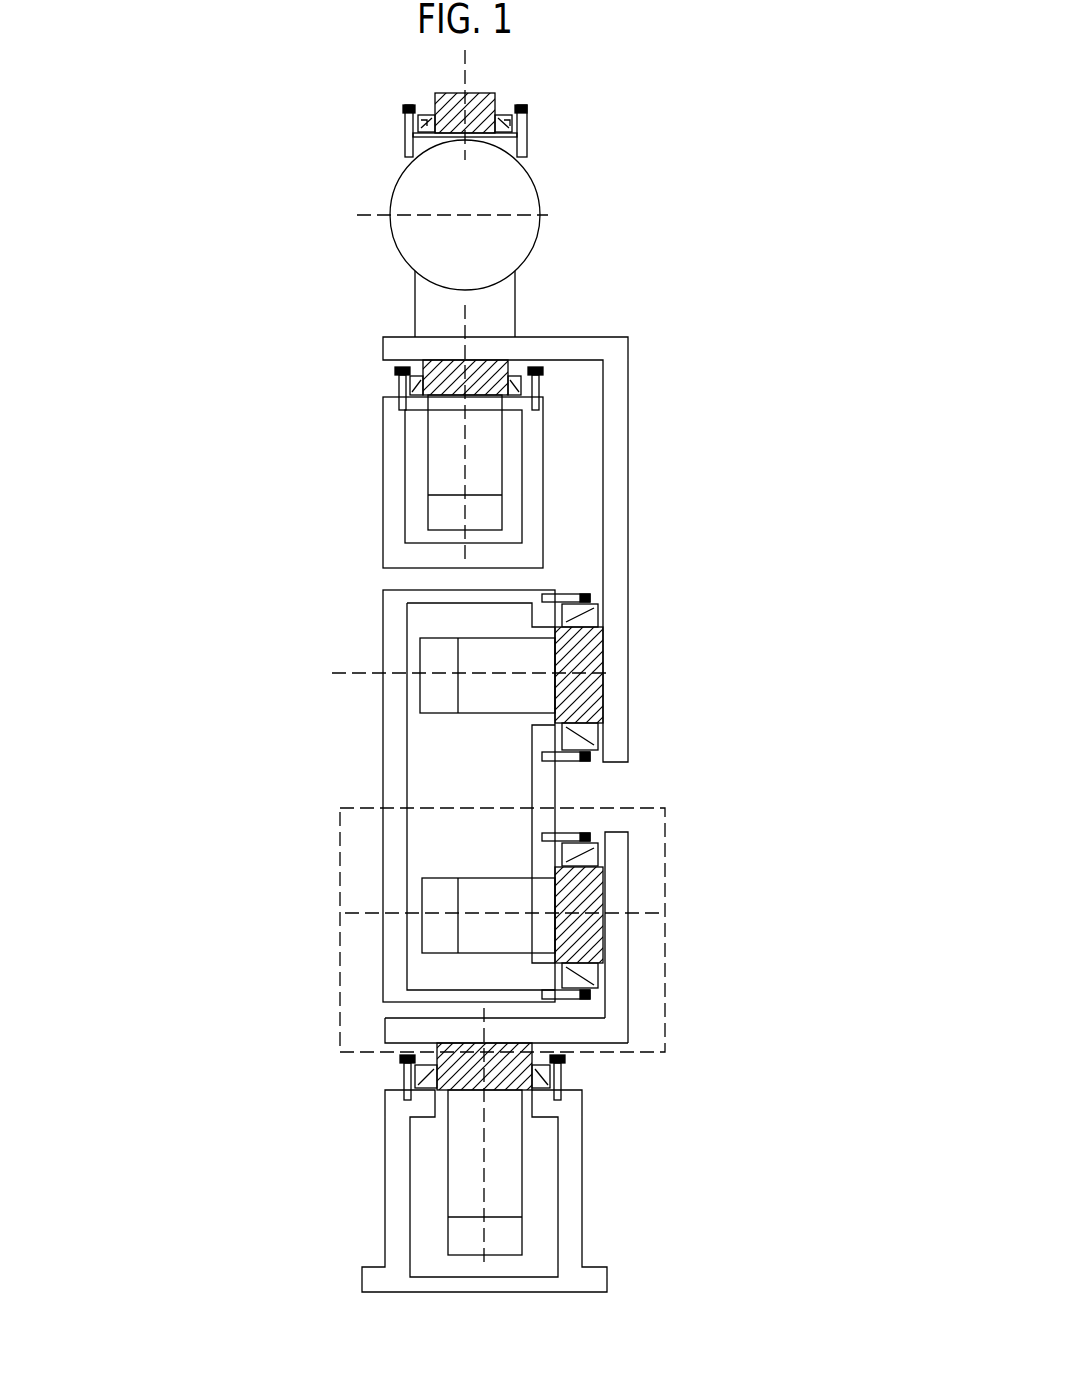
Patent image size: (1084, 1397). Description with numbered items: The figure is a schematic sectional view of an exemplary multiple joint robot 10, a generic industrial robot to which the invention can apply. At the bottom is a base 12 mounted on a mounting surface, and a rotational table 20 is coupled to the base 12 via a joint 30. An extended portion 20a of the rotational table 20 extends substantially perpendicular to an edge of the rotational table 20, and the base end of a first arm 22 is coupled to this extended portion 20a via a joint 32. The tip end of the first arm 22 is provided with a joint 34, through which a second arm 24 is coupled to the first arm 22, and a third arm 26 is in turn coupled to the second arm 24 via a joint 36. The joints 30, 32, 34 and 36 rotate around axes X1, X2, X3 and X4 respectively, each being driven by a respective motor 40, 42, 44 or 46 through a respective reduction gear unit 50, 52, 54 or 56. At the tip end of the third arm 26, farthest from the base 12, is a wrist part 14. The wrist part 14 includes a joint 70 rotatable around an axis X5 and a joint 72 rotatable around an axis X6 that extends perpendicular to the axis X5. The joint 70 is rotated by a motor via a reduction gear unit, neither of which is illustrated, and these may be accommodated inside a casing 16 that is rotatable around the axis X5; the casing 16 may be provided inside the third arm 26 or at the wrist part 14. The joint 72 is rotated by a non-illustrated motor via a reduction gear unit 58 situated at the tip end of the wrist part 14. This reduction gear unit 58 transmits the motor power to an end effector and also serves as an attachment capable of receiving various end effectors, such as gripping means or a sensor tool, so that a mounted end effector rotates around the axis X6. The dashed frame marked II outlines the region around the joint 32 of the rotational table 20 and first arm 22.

The multiple joint robot 10 is at (690, 388).
The base 12 is at (582, 1178).
The wrist part 14 is at (357, 168).
The casing 16 is at (540, 198).
The rotational table 20 is at (628, 1028).
The extended portion 20a is at (628, 953).
The first arm 22 is at (383, 662).
The second arm 24 is at (628, 455).
The third arm 26 is at (415, 290).
The joint 30 is at (370, 1063).
The joint 32 is at (642, 915).
The joint 34 is at (643, 683).
The joint 36 is at (380, 362).
The motor 40 is at (447, 1173).
The motor 42 is at (477, 878).
The motor 44 is at (480, 713).
The motor 46 is at (430, 458).
The reduction gear unit 50 is at (537, 1045).
The reduction gear unit 52 is at (592, 867).
The reduction gear unit 54 is at (600, 613).
The reduction gear unit 56 is at (513, 367).
The reduction gear unit 58 is at (497, 93).
The joint 70 is at (382, 198).
The joint 72 is at (503, 77).
The axis X1 is at (486, 1236).
The axis X2 is at (372, 913).
The axis X3 is at (612, 672).
The axis X4 is at (467, 512).
The axis X5 is at (548, 216).
The axis X6 is at (467, 60).
The section line II is at (667, 892).